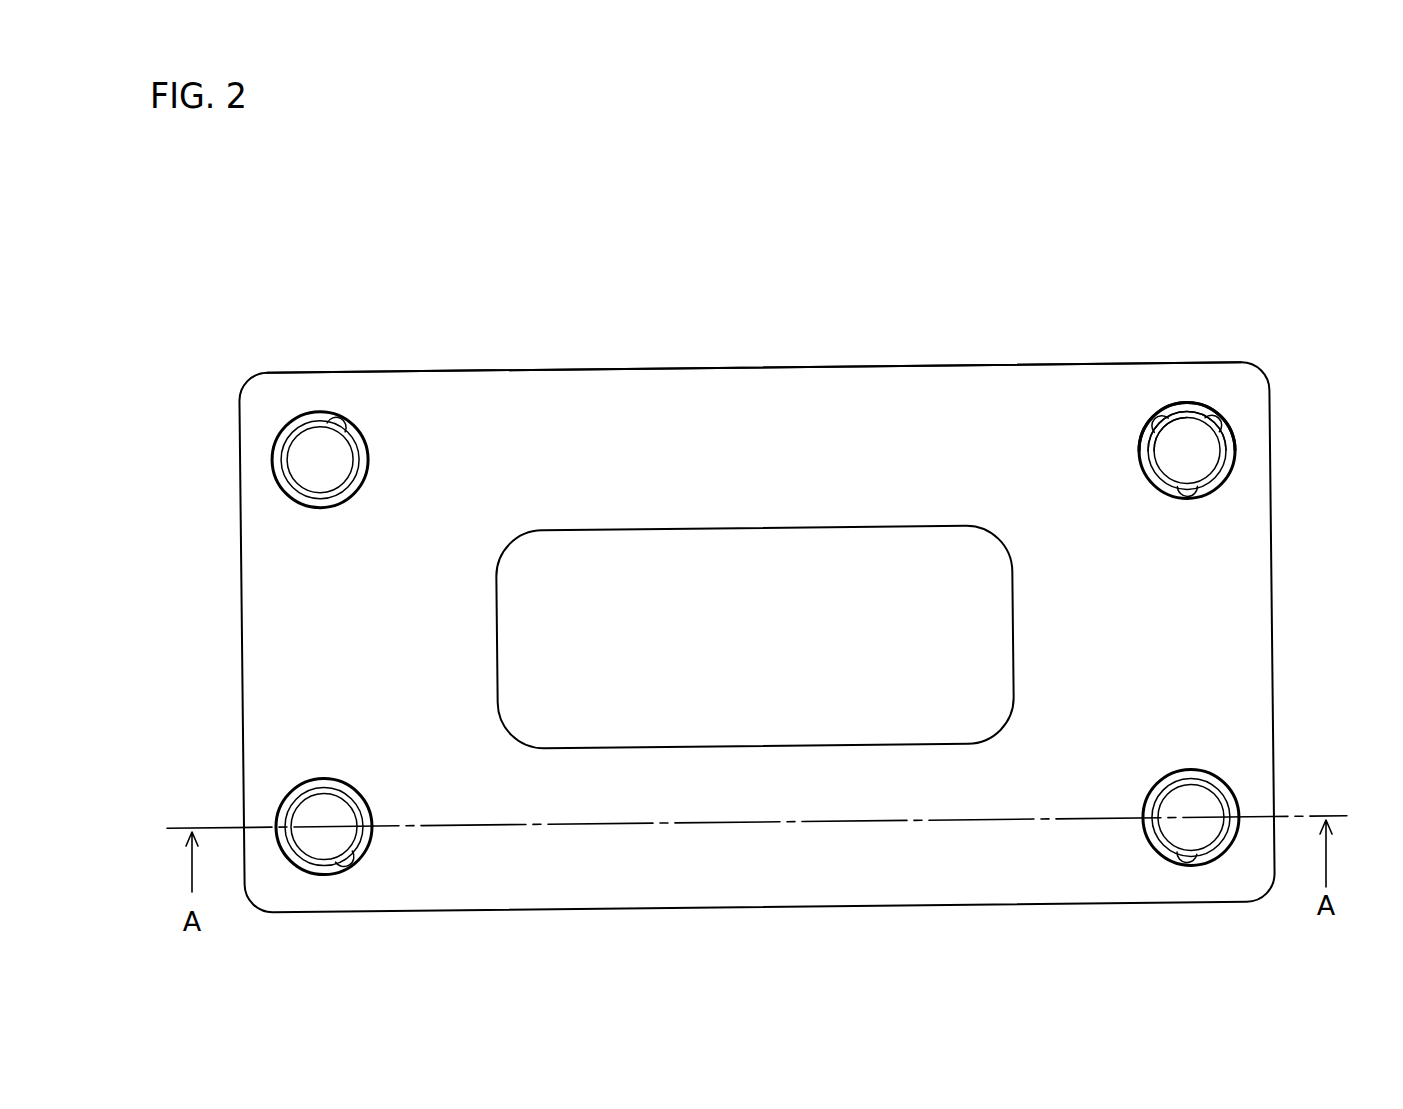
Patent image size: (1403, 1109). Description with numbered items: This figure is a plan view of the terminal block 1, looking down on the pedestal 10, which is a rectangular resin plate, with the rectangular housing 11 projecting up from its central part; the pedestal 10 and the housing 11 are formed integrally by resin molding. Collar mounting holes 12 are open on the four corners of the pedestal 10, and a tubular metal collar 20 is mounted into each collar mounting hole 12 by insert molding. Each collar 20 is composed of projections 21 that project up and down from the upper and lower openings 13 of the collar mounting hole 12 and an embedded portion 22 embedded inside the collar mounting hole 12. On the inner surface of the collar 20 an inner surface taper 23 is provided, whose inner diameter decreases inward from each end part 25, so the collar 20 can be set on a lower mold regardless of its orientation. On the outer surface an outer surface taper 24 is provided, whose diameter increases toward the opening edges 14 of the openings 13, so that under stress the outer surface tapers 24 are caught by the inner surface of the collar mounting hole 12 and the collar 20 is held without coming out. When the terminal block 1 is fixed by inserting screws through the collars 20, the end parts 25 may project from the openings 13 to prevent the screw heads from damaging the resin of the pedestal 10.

The terminal block 1 is at (367, 272).
The pedestal 10 is at (667, 455).
The housing 11 is at (740, 548).
The collar mounting hole 12 is at (317, 432).
The opening 13 is at (304, 425).
The opening edge 14 is at (292, 503).
The collar 20 is at (248, 457).
The projection 21 is at (1184, 405).
The embedded portion 22 is at (1152, 456).
The inner surface taper 23 is at (1165, 423).
The outer surface taper 24 is at (1203, 400).
The end part 25 is at (1228, 468).